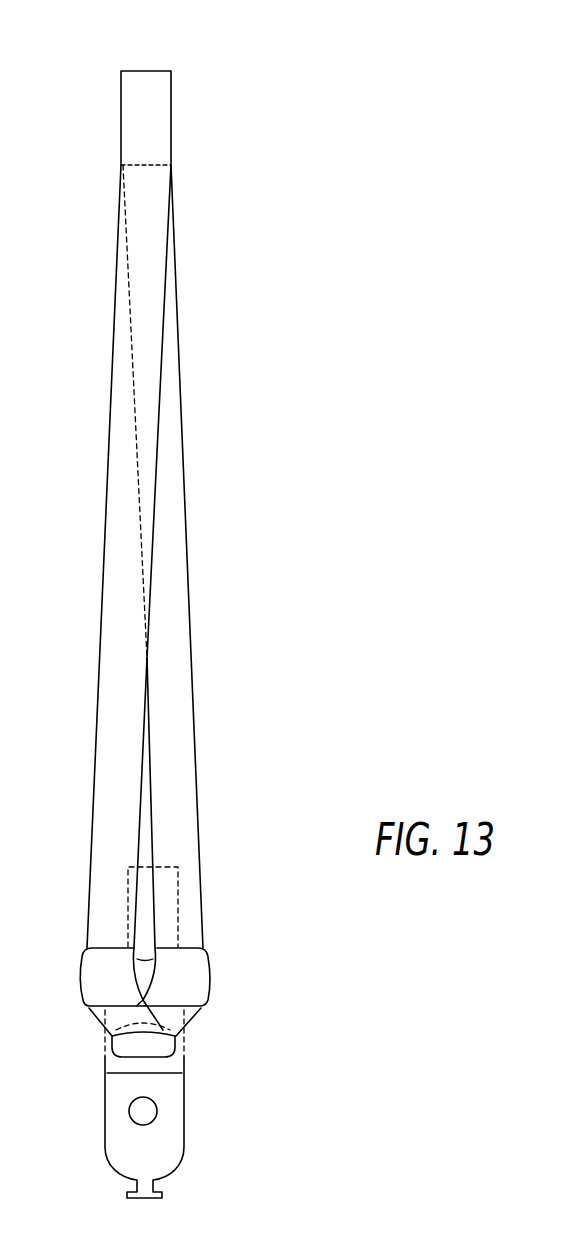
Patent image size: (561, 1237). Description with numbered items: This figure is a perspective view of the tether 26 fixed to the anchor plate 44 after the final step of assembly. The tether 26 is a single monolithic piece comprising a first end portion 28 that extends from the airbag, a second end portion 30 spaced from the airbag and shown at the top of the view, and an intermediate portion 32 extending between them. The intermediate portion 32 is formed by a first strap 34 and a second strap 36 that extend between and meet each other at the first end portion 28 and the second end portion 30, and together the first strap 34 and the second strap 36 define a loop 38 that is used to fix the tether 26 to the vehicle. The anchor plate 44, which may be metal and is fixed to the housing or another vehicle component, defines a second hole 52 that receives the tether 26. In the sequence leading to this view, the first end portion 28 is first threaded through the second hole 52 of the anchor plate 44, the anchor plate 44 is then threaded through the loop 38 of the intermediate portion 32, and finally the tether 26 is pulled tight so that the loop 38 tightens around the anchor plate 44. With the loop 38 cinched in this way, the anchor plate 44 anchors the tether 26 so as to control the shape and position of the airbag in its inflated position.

The tether 26 is at (259, 392).
The first end portion 28 is at (124, 890).
The second end portion 30 is at (121, 115).
The intermediate portion 32 is at (140, 263).
The first strap 34 is at (108, 822).
The second strap 36 is at (180, 824).
The loop 38 is at (145, 930).
The anchor plate 44 is at (183, 1127).
The second hole 52 is at (155, 1043).